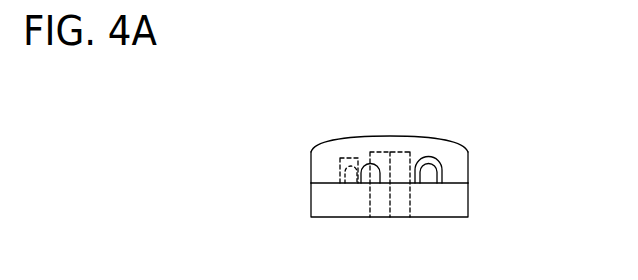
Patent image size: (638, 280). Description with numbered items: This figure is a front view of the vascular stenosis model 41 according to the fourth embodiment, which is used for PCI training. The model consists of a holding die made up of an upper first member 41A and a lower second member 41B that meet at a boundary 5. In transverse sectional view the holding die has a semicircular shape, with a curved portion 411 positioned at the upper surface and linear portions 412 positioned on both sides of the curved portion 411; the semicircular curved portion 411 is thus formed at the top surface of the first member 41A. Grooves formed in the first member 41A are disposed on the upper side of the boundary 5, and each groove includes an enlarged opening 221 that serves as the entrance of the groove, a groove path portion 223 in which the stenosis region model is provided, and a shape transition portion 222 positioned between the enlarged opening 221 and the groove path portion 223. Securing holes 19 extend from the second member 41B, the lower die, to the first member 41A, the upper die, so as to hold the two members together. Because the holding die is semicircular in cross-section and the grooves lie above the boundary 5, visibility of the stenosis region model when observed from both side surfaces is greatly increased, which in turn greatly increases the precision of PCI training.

The vascular stenosis model 41 is at (343, 86).
The first member 41A is at (364, 148).
The second member 41B is at (445, 205).
The securing holes 19 is at (379, 152).
The enlarged opening 221 is at (345, 140).
The shape transition portion 222 is at (347, 158).
The groove path portion 223 is at (411, 160).
The curved portion 411 is at (422, 160).
The linear portions 412 is at (468, 172).
The boundary 5 is at (311, 177).